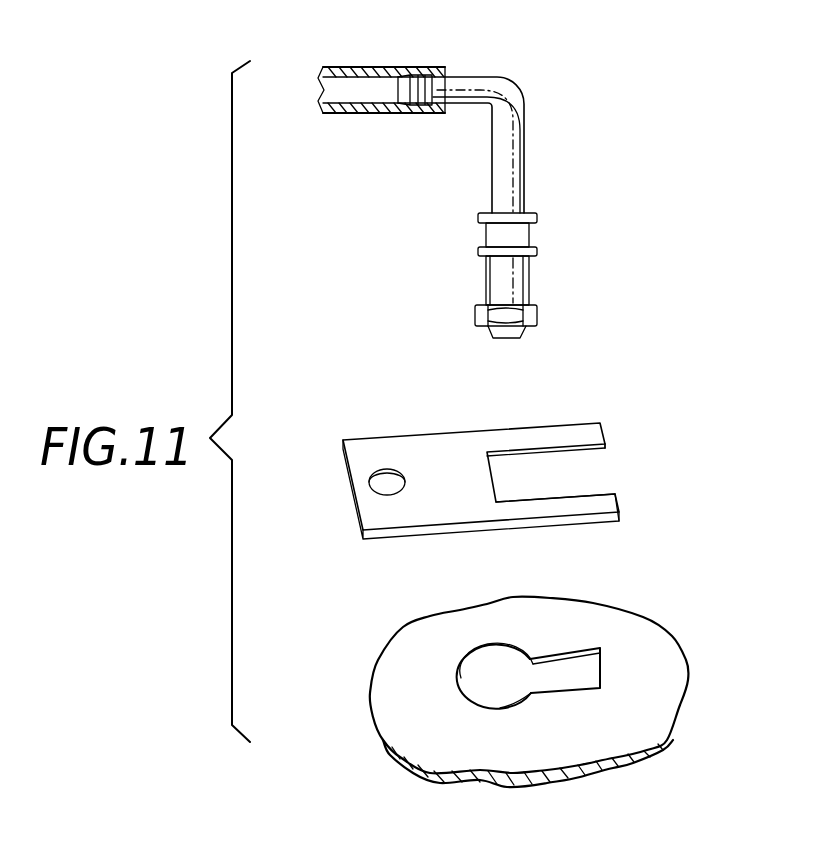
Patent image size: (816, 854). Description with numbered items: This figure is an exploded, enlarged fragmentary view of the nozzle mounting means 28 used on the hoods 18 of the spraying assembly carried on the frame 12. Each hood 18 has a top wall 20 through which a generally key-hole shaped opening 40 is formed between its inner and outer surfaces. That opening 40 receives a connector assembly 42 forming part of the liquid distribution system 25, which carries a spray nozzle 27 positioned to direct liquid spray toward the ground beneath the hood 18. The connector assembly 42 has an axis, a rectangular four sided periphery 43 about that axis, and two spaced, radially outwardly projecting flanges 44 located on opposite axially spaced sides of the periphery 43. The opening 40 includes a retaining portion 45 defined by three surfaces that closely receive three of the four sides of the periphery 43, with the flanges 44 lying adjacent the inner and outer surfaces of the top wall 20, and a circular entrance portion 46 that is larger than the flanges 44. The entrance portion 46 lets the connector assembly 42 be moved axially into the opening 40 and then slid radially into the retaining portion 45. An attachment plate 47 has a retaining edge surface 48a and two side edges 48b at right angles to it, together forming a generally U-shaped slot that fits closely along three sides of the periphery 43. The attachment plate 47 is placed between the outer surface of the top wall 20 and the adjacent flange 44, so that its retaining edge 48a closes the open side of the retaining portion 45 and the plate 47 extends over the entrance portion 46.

The liquid distribution system 25 is at (383, 66).
The nozzle mounting means 28 is at (533, 96).
The frame 12 is at (467, 158).
The flanges 44 is at (540, 218).
The rectangular four sided periphery 43 is at (486, 236).
The connector assembly 42 is at (530, 278).
The spray nozzle 27 is at (523, 328).
The attachment plate 47 is at (384, 438).
The retaining edge surface 48a is at (498, 470).
The side edges 48b is at (600, 490).
The top wall 20 is at (667, 655).
The hood 18 is at (668, 747).
The key-hole shaped opening 40 is at (487, 645).
The retaining portion 45 is at (597, 678).
The circular entrance portion 46 is at (507, 697).